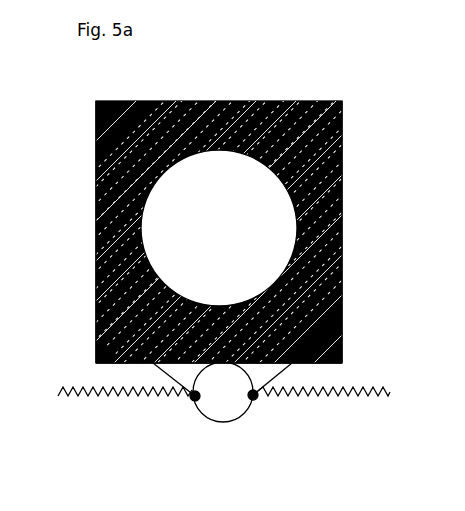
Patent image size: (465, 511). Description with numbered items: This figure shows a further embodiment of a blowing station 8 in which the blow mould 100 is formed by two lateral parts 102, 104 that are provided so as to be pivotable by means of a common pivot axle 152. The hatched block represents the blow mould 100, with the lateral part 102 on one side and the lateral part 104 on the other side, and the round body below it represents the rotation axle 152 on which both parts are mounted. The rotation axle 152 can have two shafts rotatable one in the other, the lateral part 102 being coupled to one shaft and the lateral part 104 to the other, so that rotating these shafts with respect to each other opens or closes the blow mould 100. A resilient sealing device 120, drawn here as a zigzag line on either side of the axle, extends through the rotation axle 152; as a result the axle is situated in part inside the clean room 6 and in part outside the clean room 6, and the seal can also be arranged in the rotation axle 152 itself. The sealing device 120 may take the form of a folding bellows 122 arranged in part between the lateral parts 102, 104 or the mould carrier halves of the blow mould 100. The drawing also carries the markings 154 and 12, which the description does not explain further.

The blow mould 100 is at (367, 227).
The lateral part 102 is at (97, 308).
The lateral part 104 is at (342, 292).
The clean room 6 is at (383, 362).
The blowing station 8 is at (120, 413).
The sealing device 120 is at (345, 403).
The folding bellows 122 is at (73, 396).
The pivot axle 152 is at (228, 412).
The pivot contact point 154 is at (256, 398).
The frame 12 is at (453, 444).